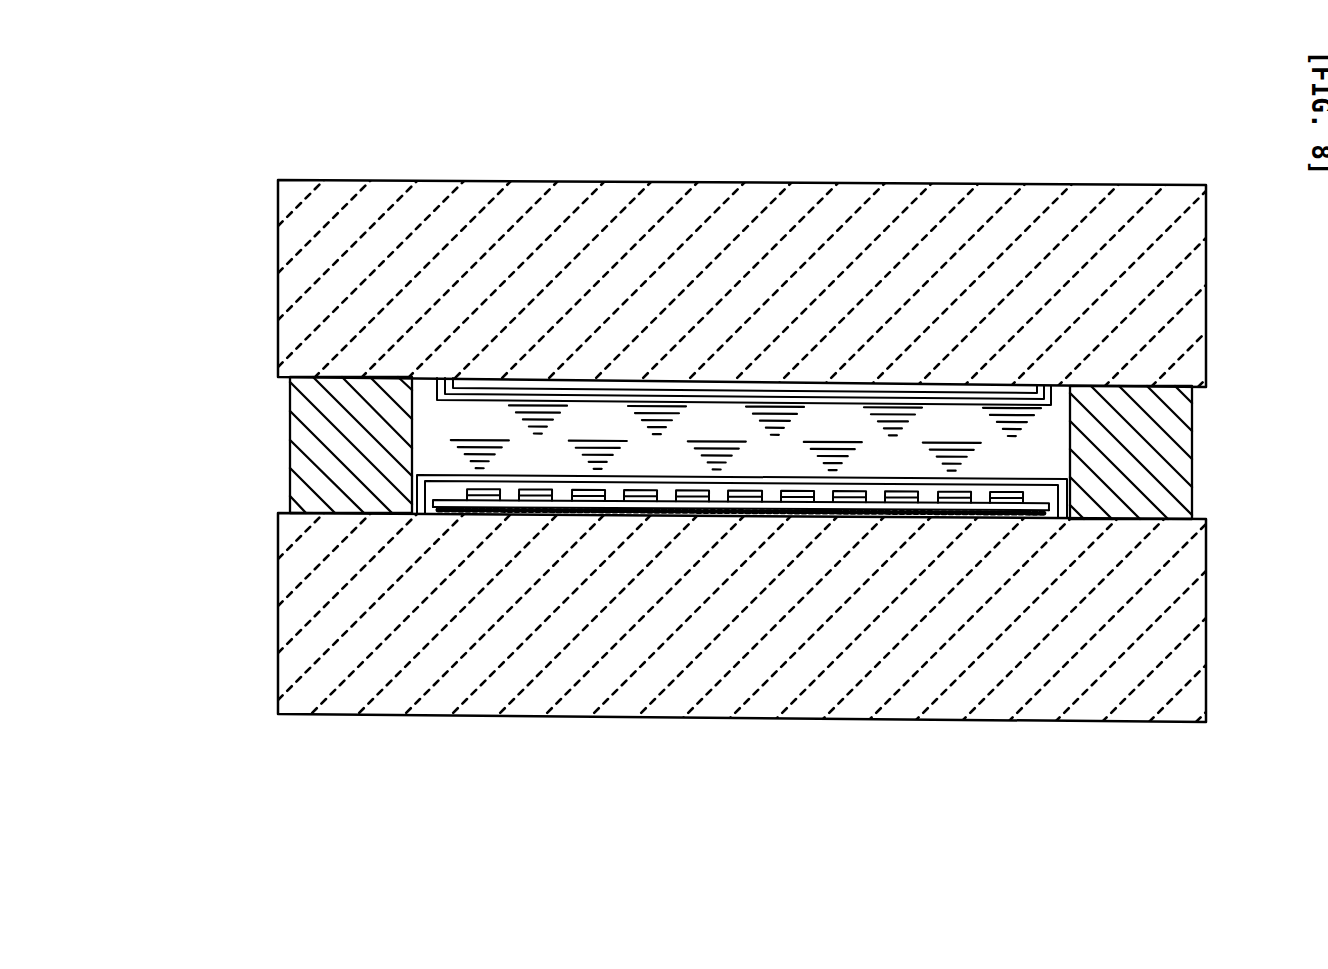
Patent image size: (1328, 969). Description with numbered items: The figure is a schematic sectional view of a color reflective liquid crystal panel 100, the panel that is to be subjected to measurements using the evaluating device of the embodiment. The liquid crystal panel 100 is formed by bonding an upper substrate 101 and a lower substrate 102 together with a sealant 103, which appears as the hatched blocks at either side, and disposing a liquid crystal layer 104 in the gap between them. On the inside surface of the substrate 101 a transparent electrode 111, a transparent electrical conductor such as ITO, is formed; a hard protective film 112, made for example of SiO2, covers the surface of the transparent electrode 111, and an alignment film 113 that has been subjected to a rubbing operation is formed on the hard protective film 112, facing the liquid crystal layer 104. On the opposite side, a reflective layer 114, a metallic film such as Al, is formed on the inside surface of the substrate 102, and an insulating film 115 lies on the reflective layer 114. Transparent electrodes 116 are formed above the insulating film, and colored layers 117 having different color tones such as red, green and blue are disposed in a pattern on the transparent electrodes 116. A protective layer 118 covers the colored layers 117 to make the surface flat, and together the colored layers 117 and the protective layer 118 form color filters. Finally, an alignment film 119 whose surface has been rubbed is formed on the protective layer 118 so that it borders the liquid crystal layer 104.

The color reflective liquid crystal panel 100 is at (805, 82).
The substrate 101 is at (553, 190).
The substrate 102 is at (567, 700).
The sealant 103 is at (300, 447).
The liquid crystal layer 104 is at (605, 418).
The transparent electrode 111 is at (987, 390).
The hard protective film 112 is at (905, 398).
The alignment film 113 is at (490, 394).
The reflective layer 114 is at (500, 513).
The insulating film 115 is at (688, 503).
The transparent electrodes 116 is at (797, 503).
The colored layers 117 is at (957, 503).
The protective layer 118 is at (1037, 503).
The alignment film 119 is at (450, 513).